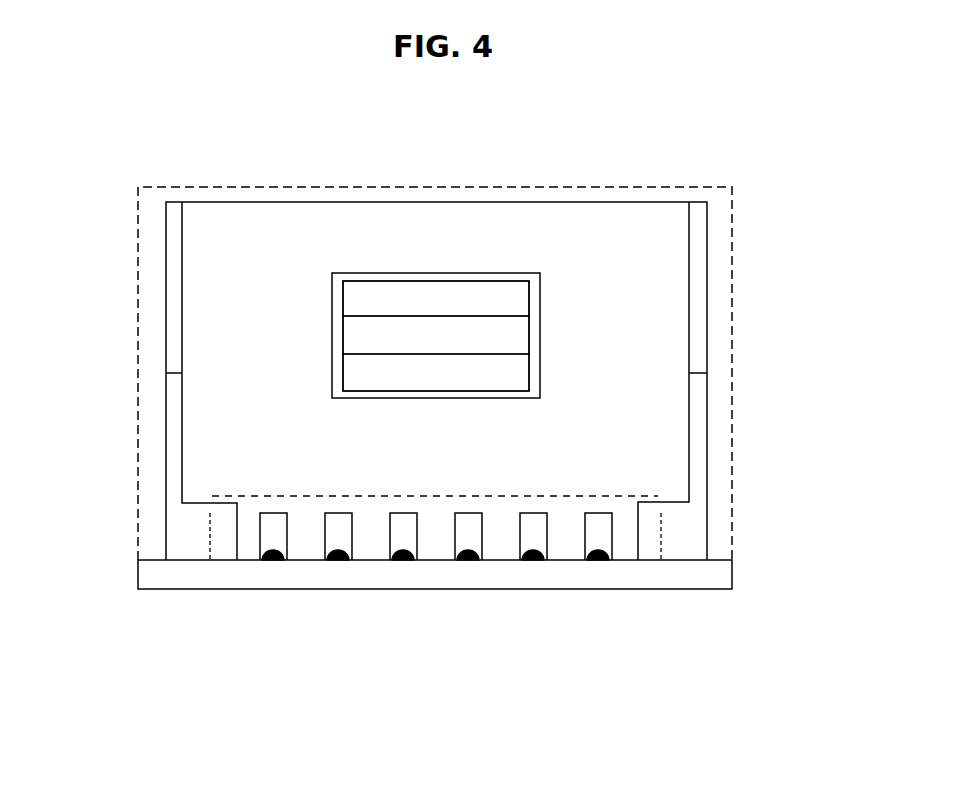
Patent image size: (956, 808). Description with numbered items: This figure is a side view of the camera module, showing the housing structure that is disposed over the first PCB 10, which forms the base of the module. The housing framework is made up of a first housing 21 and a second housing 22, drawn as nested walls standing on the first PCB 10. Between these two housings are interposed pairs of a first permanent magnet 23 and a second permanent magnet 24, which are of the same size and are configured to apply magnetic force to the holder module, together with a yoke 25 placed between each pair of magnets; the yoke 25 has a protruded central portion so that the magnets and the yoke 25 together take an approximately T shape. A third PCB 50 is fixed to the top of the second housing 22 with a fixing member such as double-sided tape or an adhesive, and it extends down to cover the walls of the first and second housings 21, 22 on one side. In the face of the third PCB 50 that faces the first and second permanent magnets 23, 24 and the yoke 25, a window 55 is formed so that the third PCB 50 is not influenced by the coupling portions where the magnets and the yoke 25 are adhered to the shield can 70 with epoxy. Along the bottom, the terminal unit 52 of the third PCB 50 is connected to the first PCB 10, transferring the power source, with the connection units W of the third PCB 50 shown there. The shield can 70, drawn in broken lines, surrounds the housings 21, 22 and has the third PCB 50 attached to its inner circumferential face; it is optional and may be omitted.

The first printed circuit board 10 is at (167, 578).
The first housing 21 is at (698, 412).
The second housing 22 is at (700, 318).
The first permanent magnet 23 is at (353, 377).
The second permanent magnet 24 is at (352, 298).
The yoke 25 is at (353, 340).
The third printed circuit board 50 is at (270, 222).
The terminal unit 52 is at (600, 513).
The window 55 is at (453, 272).
The shield can 70 is at (683, 187).
The connection unit W is at (466, 560).